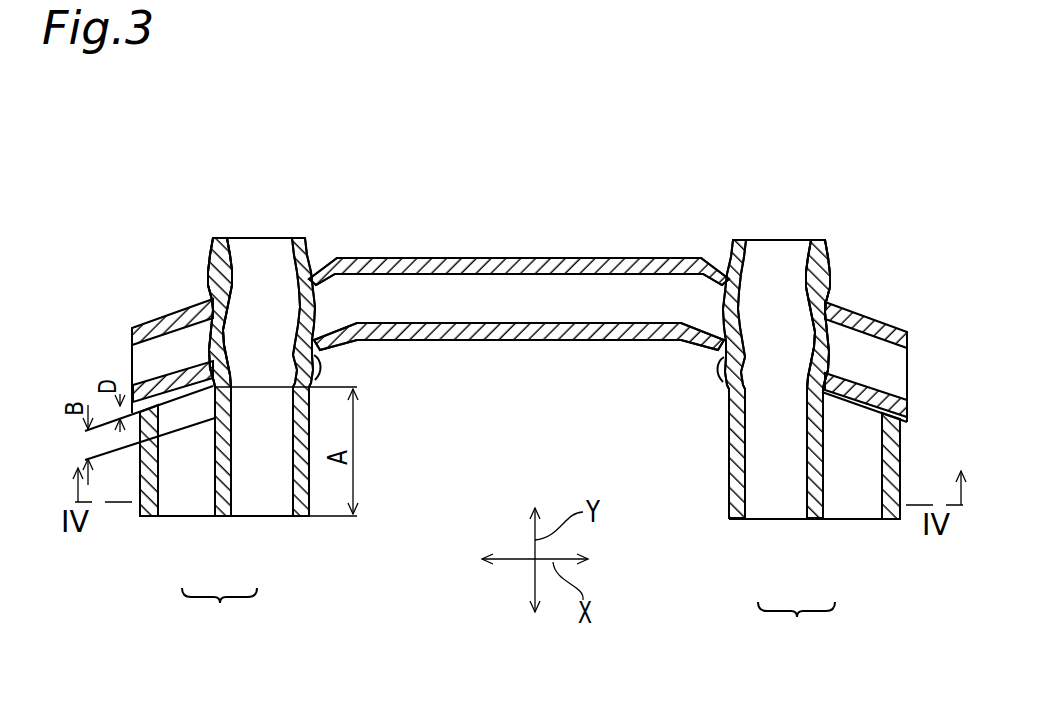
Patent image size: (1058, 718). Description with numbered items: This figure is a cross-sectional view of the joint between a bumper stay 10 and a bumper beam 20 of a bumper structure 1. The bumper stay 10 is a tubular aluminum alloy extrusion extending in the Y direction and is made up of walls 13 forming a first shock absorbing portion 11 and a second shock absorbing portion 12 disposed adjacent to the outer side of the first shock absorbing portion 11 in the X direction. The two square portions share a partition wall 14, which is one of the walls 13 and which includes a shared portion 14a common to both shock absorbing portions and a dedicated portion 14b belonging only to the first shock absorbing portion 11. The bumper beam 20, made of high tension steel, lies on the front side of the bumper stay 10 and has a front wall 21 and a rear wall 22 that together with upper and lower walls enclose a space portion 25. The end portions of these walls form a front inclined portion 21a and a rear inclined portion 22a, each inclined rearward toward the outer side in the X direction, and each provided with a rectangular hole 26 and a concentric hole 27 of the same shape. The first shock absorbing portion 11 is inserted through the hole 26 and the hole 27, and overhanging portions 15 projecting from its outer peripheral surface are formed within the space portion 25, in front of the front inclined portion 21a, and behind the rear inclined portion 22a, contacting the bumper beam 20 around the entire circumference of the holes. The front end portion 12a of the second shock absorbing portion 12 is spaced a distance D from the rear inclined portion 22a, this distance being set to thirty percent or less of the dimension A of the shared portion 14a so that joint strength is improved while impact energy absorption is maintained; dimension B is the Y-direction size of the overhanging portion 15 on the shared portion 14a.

The heat exchanger 1 is at (203, 158).
The bumper stay 10 is at (508, 620).
The first shock absorbing portion 11 is at (258, 520).
The second shock absorbing portion 12 is at (166, 520).
The end portion 12a is at (132, 373).
The walls 13 is at (143, 515).
The partition wall 14 is at (236, 490).
The shared portion 14a is at (234, 462).
The dedicated portion 14b is at (226, 322).
The overhanging portion 15 is at (213, 240).
The bumper beam 20 is at (455, 255).
The front wall 21 is at (553, 257).
The front inclined portion 21a is at (190, 312).
The rear wall 22 is at (543, 341).
The rear inclined portion 22a is at (176, 372).
The space portion 25 is at (493, 300).
The hole 26 is at (312, 368).
The hole 27 is at (228, 268).